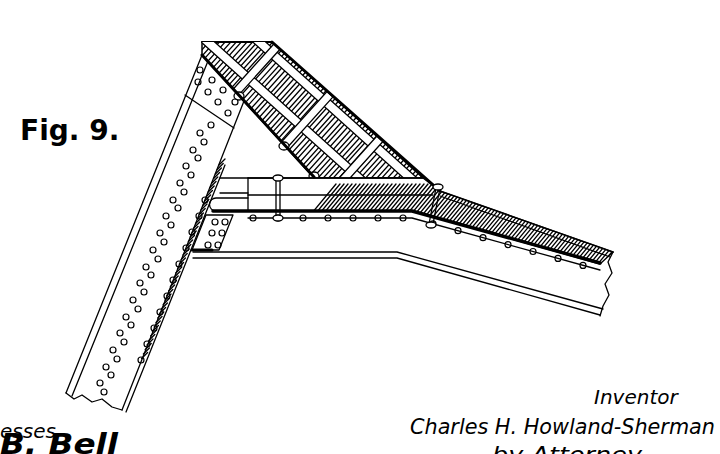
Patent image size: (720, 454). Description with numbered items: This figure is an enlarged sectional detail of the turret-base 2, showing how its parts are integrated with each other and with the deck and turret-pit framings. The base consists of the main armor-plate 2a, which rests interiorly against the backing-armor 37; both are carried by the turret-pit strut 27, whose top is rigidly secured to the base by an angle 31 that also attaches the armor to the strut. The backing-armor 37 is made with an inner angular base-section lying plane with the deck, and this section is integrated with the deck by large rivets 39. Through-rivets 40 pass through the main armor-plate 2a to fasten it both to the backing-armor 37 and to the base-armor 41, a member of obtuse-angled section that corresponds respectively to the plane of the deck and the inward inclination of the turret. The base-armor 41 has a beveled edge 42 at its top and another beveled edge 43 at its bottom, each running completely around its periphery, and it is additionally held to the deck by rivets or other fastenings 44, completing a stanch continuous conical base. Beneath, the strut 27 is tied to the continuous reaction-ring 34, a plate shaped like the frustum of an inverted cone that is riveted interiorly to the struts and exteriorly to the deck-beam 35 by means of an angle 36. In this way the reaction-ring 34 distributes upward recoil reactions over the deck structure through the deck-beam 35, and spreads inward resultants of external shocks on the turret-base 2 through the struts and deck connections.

The turret-base 2 is at (275, 42).
The main armor-plate 2a is at (368, 130).
The turret-pit strut 27 is at (136, 215).
The angle 31 is at (187, 88).
The reaction-ring 34 is at (179, 288).
The deck-beam 35 is at (398, 272).
The angle 36 is at (233, 242).
The backing-armor 37 is at (263, 121).
The rivets 39 is at (278, 176).
The through-rivets 40 is at (278, 53).
The base-armor 41 is at (358, 116).
The beveled edge 42 is at (322, 84).
The beveled edge 43 is at (466, 247).
The fastenings 44 is at (447, 185).